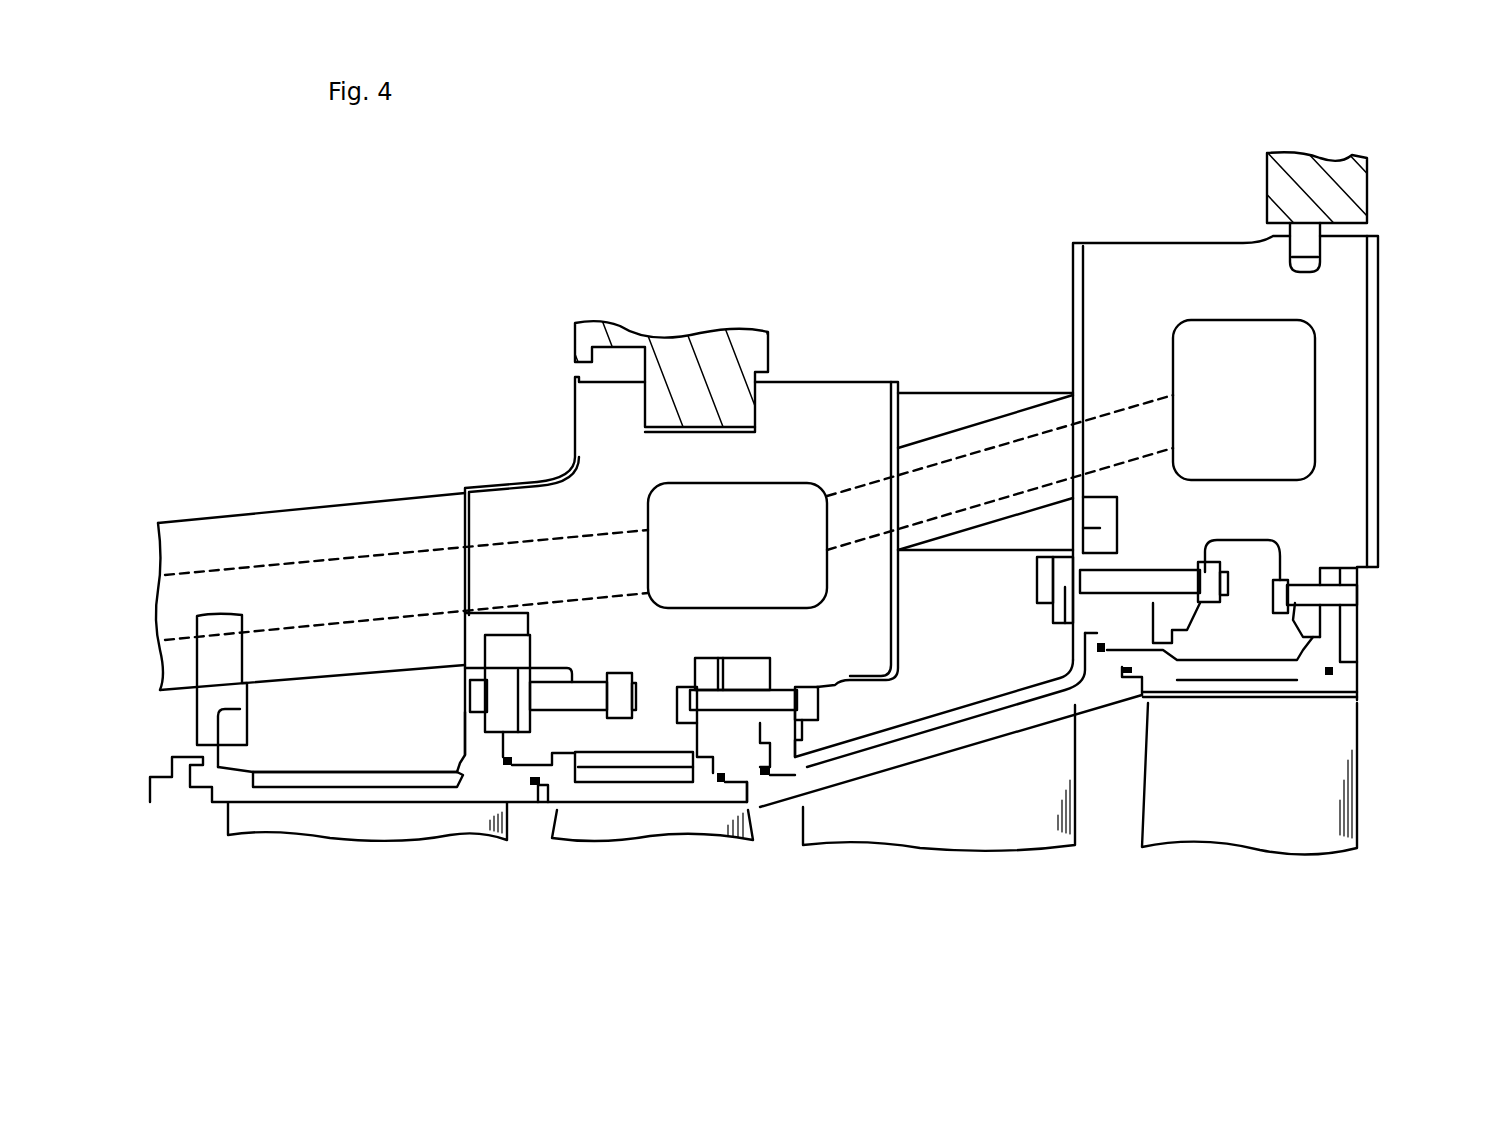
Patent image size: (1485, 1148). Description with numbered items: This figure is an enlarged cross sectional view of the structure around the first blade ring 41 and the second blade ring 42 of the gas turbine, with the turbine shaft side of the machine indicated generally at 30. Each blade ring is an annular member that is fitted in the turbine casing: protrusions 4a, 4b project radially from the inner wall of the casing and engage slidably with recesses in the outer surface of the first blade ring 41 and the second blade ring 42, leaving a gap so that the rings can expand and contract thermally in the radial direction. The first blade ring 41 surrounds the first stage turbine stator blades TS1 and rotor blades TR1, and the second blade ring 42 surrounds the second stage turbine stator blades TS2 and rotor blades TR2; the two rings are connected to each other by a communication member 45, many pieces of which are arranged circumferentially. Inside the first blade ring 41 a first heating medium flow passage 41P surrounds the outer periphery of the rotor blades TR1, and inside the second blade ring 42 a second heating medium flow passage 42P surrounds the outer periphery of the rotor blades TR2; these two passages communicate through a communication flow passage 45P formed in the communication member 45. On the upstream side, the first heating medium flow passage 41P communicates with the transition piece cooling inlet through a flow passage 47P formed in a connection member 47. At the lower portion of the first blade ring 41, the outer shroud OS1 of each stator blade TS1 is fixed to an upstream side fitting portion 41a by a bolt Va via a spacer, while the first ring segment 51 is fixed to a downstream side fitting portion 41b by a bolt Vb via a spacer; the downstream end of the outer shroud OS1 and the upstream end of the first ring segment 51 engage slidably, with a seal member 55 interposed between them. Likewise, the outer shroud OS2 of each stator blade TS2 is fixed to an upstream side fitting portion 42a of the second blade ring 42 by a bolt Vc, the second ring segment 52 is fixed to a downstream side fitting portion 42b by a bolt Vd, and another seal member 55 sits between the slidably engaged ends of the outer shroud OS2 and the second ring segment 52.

The base / casing 30 is at (181, 861).
The first blade ring 41 is at (553, 507).
The first heating medium flow passage 41P is at (762, 560).
The upstream side fitting portion 41a is at (587, 728).
The downstream side fitting portion 41b is at (800, 723).
The second blade ring 42 is at (1337, 427).
The second heating medium flow passage 42P is at (1220, 424).
The upstream side fitting portion 42a is at (1172, 618).
The downstream side fitting portion 42b is at (1303, 622).
The communication member 45 is at (960, 407).
The communication flow passage 45P is at (980, 500).
The connection member 47 is at (212, 537).
The flow passage 47P is at (283, 567).
The protrusion 4a is at (743, 398).
The protrusion 4b is at (1340, 195).
The first ring segment 51 is at (700, 783).
The second ring segment 52 is at (1347, 687).
The seal member 55 is at (517, 780).
The bolt Va is at (470, 690).
The bolt Vb is at (713, 707).
The bolt Vc is at (1090, 582).
The bolt Vd is at (1350, 598).
The first stage turbine stator blade TS1 is at (242, 828).
The second stage turbine stator blade TS2 is at (960, 817).
The first stage turbine rotor blade TR1 is at (580, 827).
The second stage turbine rotor blade TR2 is at (1340, 813).
The outer shroud OS1 is at (523, 795).
The outer shroud OS2 is at (1007, 723).